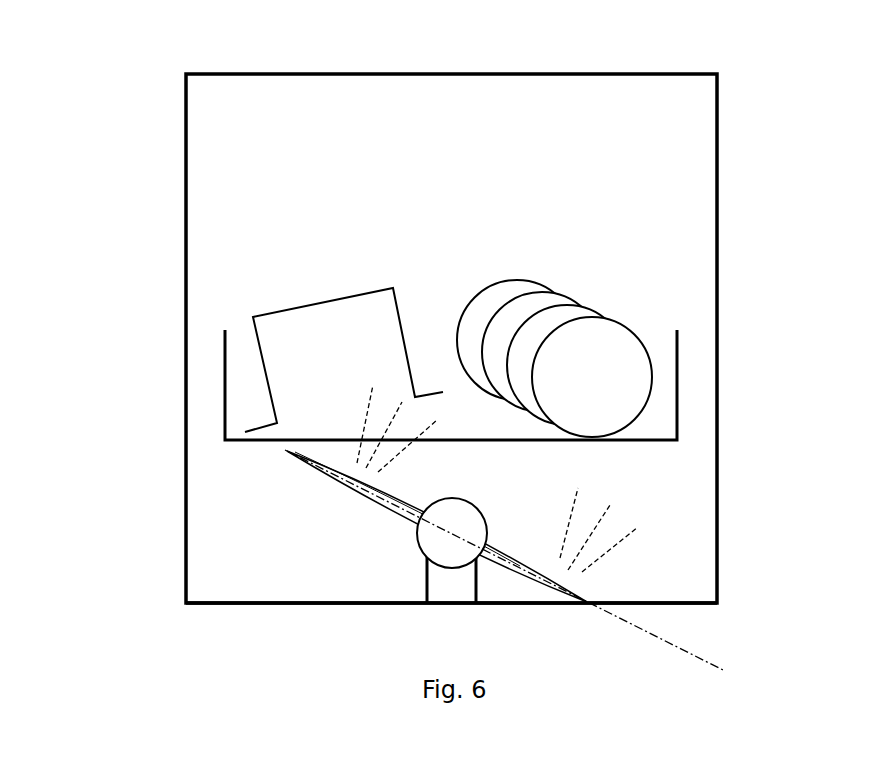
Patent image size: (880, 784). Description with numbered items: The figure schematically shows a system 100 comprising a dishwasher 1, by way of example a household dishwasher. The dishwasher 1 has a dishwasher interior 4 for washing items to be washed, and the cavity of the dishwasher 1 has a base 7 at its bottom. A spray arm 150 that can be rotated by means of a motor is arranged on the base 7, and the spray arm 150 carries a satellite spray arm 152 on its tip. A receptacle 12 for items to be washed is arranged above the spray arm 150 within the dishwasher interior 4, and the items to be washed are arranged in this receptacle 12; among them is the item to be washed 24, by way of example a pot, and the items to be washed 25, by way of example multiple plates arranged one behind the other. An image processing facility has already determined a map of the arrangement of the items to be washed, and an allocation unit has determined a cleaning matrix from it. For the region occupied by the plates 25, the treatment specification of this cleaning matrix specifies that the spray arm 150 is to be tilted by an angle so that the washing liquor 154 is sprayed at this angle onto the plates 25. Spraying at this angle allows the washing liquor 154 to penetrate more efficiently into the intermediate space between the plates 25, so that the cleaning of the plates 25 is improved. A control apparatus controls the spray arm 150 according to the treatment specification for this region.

The dishwasher 1 is at (235, 72).
The system 100 is at (96, 145).
The dishwasher interior 4 is at (462, 189).
The base 7 is at (237, 604).
The receptacle for items to be washed 12 is at (223, 402).
The item to be washed 24 is at (318, 305).
The plates 25 is at (513, 279).
The spray arm 150 is at (418, 550).
The satellite spray arm 152 is at (378, 507).
The washing liquor 154 is at (653, 532).